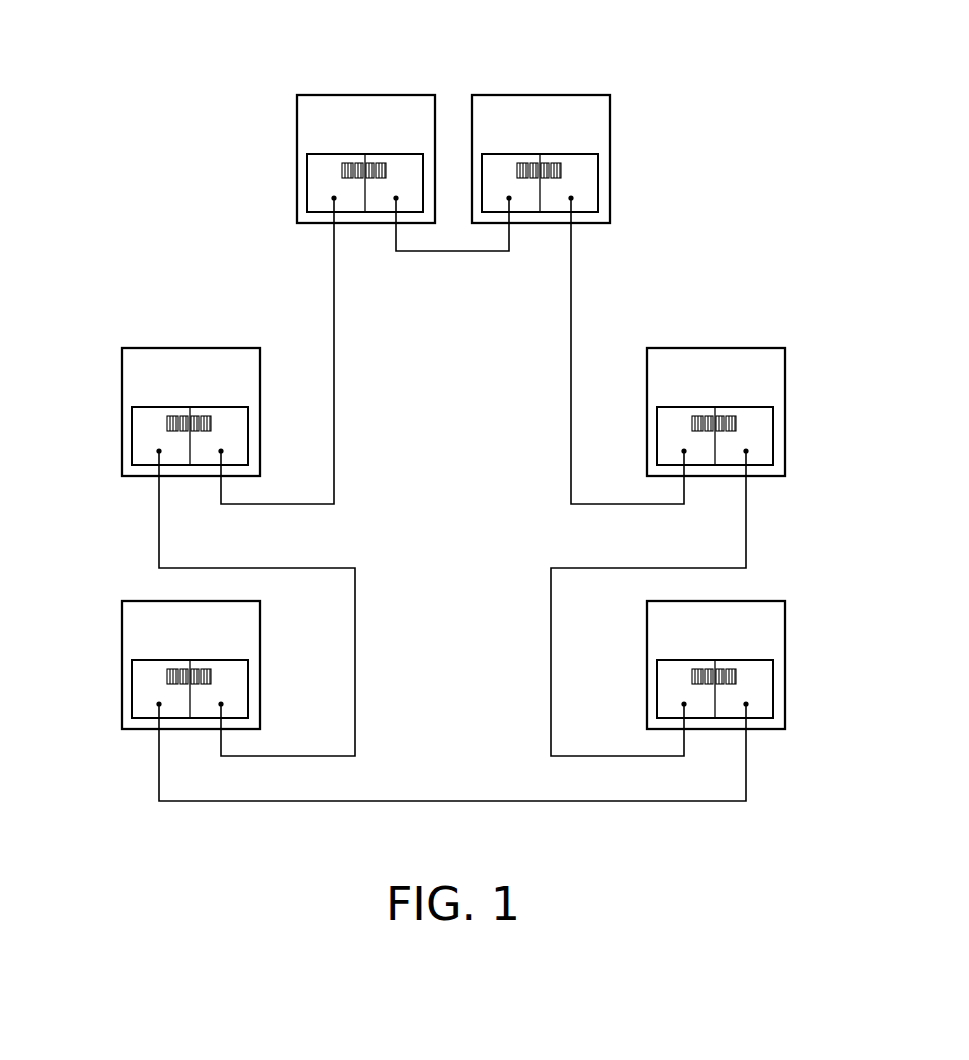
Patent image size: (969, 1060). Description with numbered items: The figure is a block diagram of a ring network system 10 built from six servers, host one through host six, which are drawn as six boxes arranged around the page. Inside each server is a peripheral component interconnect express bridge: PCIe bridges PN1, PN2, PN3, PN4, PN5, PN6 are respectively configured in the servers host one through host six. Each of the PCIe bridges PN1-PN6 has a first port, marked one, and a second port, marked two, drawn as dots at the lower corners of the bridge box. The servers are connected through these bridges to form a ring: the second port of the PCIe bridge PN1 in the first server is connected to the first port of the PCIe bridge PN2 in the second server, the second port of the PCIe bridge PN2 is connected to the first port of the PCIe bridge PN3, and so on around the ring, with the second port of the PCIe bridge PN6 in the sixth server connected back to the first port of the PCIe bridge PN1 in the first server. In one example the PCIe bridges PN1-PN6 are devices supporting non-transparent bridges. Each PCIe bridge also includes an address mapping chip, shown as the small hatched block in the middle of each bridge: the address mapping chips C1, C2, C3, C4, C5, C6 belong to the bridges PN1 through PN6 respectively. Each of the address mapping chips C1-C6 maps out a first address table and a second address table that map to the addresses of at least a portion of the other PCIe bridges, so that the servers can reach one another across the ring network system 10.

The ring network system 10 is at (133, 27).
The PCIe bridge PN1 is at (145, 416).
The PCIe bridge PN2 is at (320, 163).
The PCIe bridge PN3 is at (583, 163).
The PCIe bridge PN4 is at (758, 416).
The PCIe bridge PN5 is at (758, 669).
The PCIe bridge PN6 is at (145, 669).
The address mapping chip C1 is at (189, 458).
The address mapping chip C2 is at (364, 205).
The address mapping chip C3 is at (539, 205).
The address mapping chip C4 is at (714, 458).
The address mapping chip C5 is at (714, 711).
The address mapping chip C6 is at (189, 711).